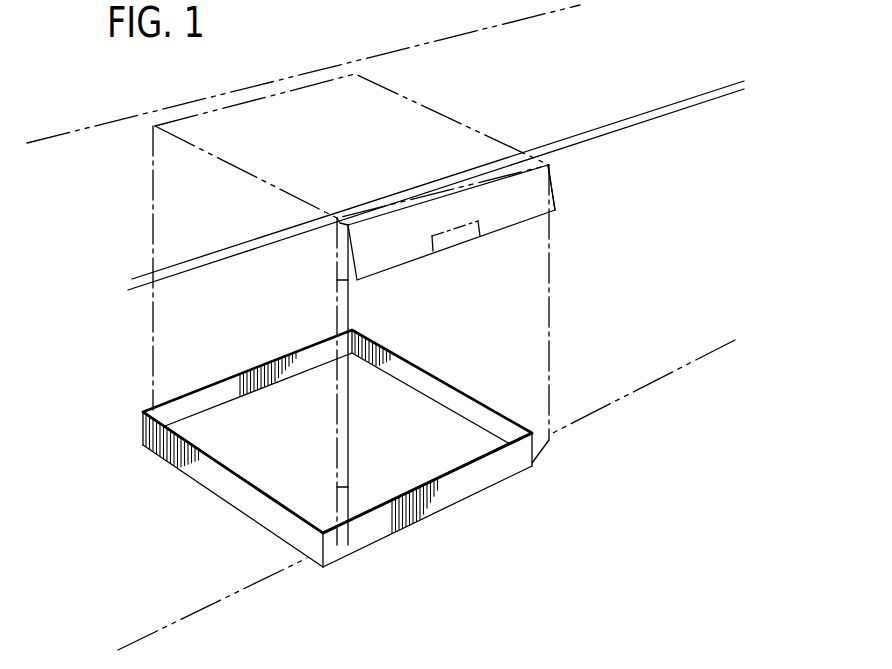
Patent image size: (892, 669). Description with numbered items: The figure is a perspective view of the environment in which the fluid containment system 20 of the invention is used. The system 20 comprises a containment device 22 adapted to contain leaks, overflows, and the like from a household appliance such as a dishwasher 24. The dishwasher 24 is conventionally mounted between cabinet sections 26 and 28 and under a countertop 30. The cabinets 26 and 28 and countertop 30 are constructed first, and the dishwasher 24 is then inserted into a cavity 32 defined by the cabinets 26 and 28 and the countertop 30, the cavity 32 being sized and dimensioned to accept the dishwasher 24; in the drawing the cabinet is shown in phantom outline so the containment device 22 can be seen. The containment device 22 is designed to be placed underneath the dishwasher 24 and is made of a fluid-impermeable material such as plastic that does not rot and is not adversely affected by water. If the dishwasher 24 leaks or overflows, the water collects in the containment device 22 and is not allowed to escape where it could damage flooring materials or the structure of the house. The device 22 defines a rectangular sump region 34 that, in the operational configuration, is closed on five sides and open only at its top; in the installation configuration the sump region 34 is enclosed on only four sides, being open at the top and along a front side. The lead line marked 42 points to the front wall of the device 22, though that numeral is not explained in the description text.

The fluid containment system 20 is at (147, 458).
The containment device 22 is at (208, 487).
The dishwasher 24 is at (153, 312).
The cabinet section 26 is at (200, 609).
The cabinet section 28 is at (630, 395).
The countertop 30 is at (618, 133).
The cavity 32 is at (553, 267).
The sump region 34 is at (290, 475).
The front wall of tray 42 is at (367, 544).